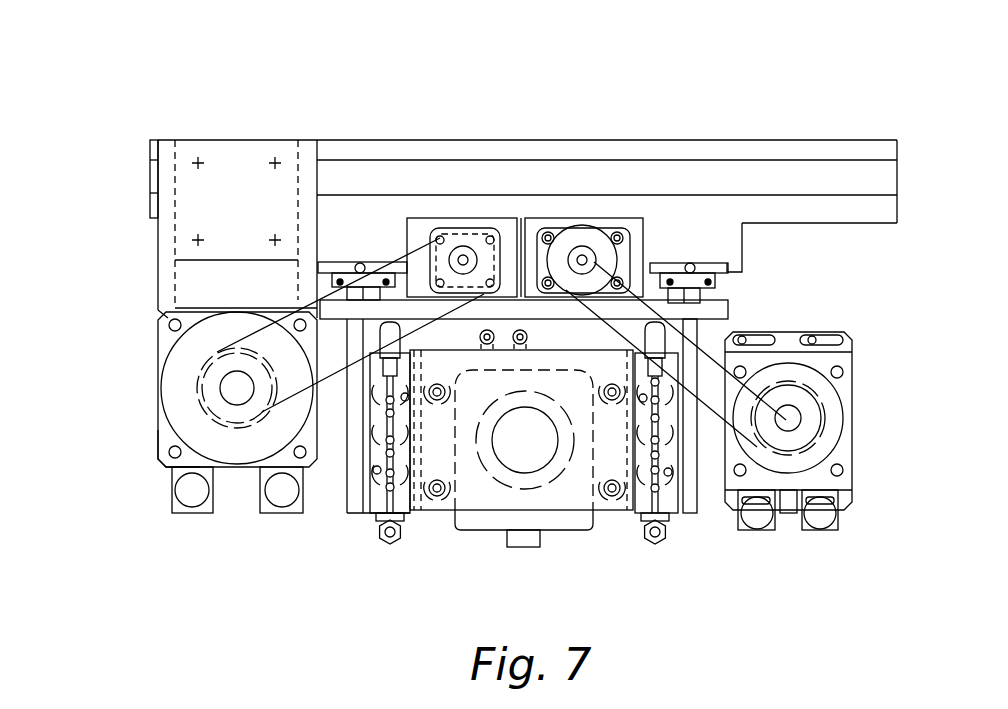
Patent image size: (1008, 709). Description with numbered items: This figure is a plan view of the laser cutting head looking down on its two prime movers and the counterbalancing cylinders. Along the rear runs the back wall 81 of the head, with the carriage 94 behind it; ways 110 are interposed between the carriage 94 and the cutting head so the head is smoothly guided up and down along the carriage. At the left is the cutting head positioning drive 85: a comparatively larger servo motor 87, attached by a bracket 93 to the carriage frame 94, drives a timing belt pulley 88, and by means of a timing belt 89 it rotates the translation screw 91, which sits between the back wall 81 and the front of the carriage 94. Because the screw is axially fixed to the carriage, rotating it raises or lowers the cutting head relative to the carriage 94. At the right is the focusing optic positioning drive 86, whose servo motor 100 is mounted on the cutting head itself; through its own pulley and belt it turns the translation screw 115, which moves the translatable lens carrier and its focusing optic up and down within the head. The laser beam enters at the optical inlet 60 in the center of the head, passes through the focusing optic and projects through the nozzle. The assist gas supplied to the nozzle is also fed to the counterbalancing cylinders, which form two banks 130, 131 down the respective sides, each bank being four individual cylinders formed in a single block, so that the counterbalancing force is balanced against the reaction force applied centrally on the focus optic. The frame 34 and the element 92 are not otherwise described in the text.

The frame 34 is at (355, 513).
The optical inlet 60 is at (533, 440).
The back wall 81 is at (537, 150).
The cutting head positioning drive 85 is at (358, 213).
The focusing optic positioning drive 86 is at (672, 207).
The servo motor 87 is at (168, 362).
The timing belt pulley 88 is at (230, 448).
The timing belt 89 is at (305, 300).
The translation screw 91 is at (523, 312).
The first drive unit 92 is at (463, 258).
The bracket 93 is at (168, 437).
The carriage 94 is at (527, 218).
The servo motor 100 is at (837, 418).
The ways 110 is at (366, 283).
The translation screw 115 is at (583, 258).
The bank of cylinders 130 is at (370, 437).
The bank of cylinders 131 is at (680, 442).